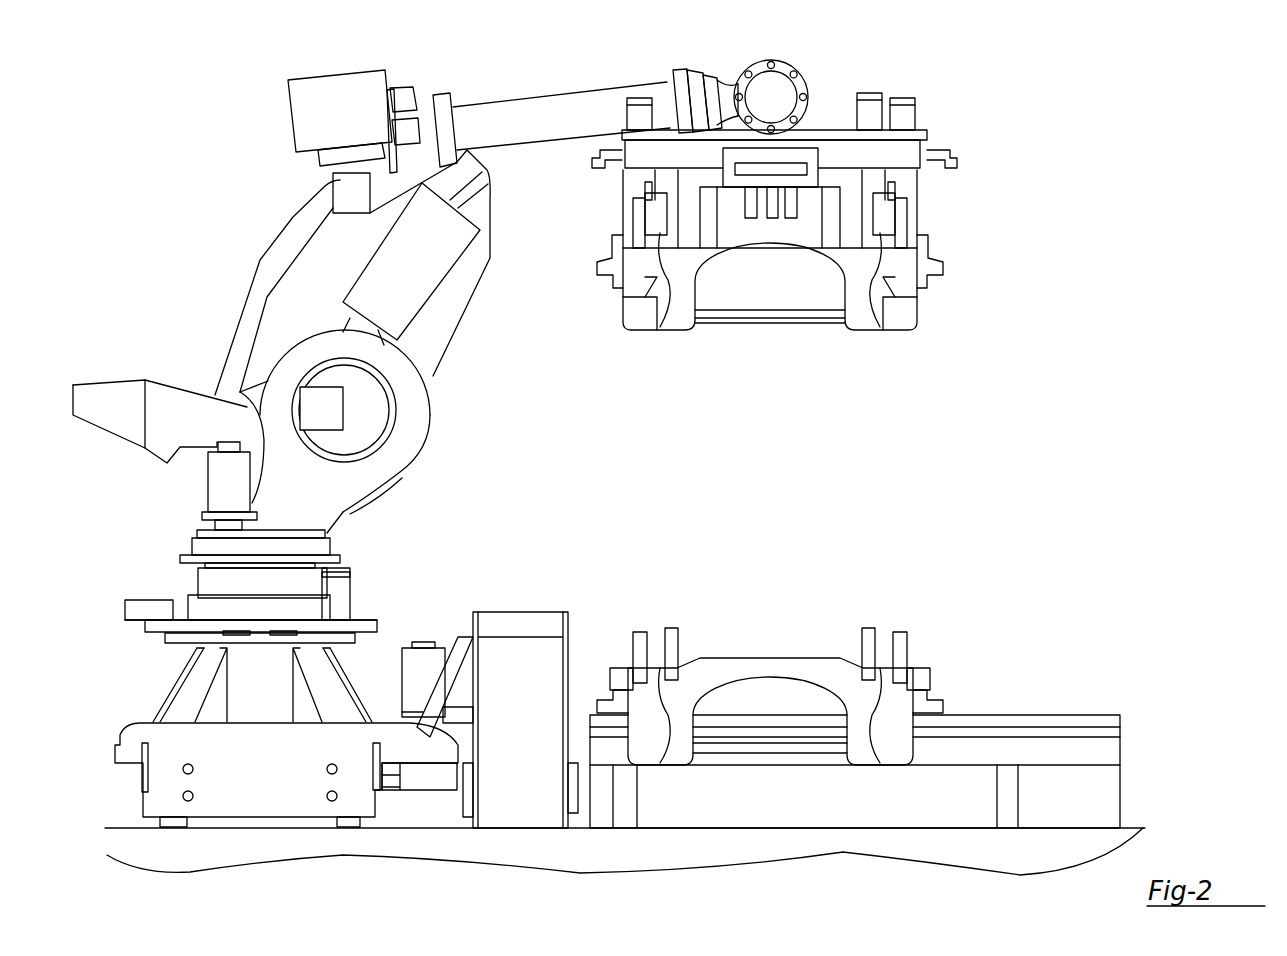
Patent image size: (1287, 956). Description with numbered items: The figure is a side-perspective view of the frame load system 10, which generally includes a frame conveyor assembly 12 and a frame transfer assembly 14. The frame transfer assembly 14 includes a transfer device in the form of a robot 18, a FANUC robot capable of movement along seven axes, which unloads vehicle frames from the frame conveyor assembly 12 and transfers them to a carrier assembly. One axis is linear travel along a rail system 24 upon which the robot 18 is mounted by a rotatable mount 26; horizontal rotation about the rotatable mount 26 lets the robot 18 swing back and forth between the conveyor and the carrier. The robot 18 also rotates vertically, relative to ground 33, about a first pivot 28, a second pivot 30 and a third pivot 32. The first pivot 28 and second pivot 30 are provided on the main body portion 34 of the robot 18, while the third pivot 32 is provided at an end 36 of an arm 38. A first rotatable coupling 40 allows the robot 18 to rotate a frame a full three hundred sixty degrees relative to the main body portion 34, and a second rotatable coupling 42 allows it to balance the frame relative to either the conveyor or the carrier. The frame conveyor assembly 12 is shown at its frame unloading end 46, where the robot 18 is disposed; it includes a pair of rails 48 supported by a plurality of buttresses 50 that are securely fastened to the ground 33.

The frame load system 10 is at (1068, 280).
The frame conveyor assembly 12 is at (997, 605).
The frame transfer assembly 14 is at (158, 197).
The robot 18 is at (95, 388).
The rail system 24 is at (158, 834).
The rotatable mount 26 is at (188, 602).
The first pivot 28 is at (374, 412).
The second pivot 30 is at (468, 196).
The third pivot 32 is at (769, 86).
The ground 33 is at (668, 866).
The main body portion 34 is at (343, 512).
The end 36 is at (802, 62).
The arm 38 is at (521, 106).
The first rotatable coupling 40 is at (808, 127).
The second rotatable coupling 42 is at (686, 100).
The frame unloading end 46 is at (585, 703).
The rails 48 is at (942, 763).
The buttresses 50 is at (632, 803).